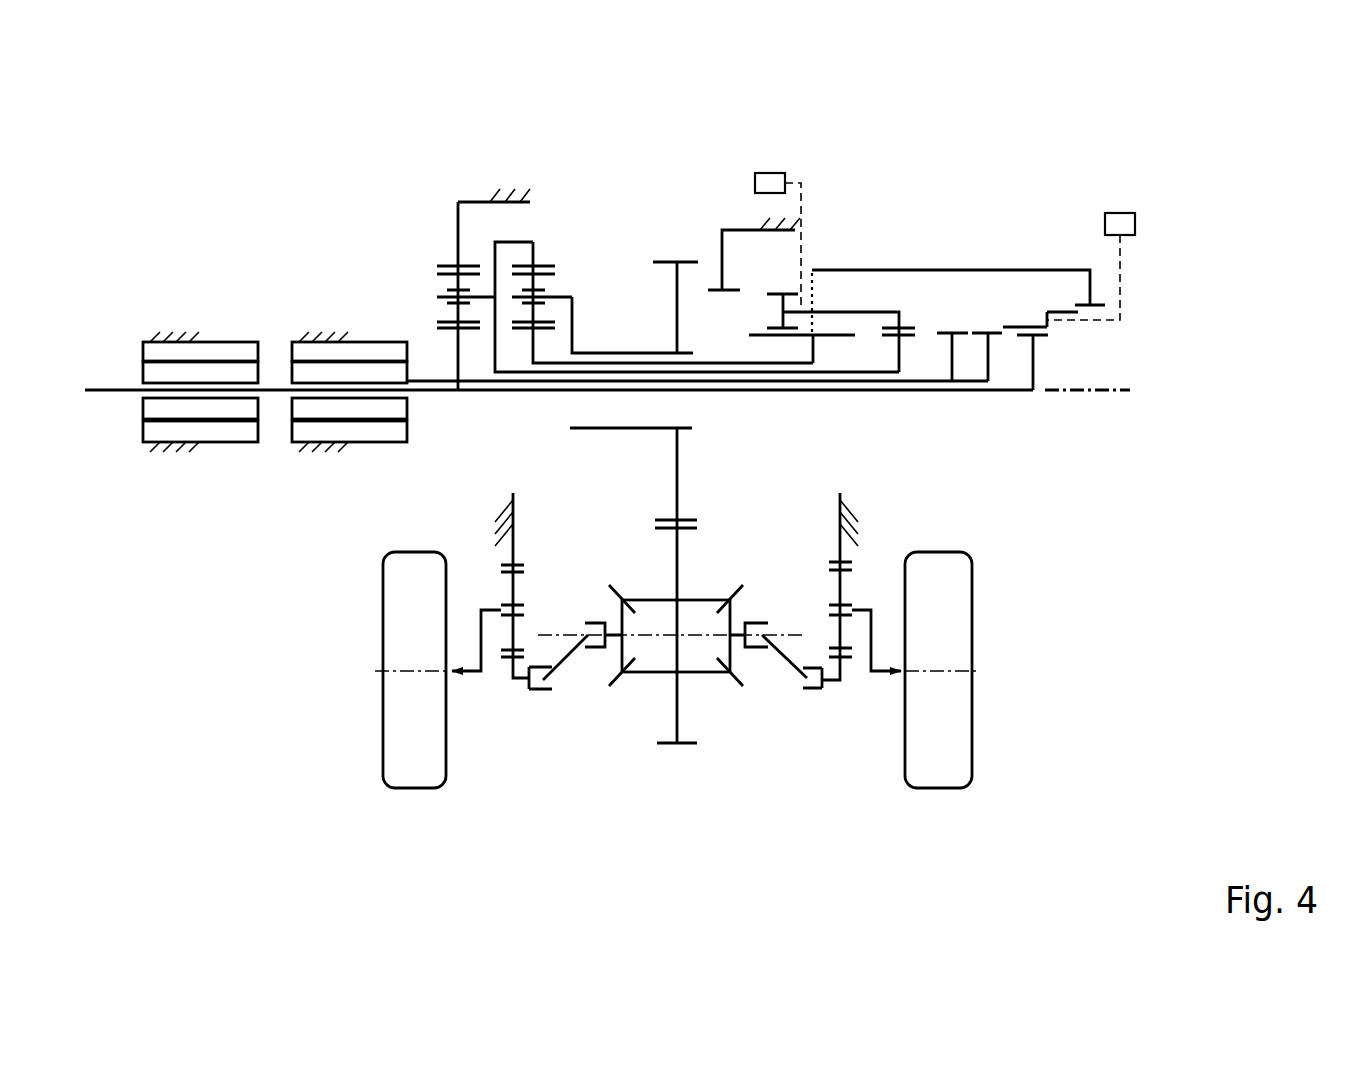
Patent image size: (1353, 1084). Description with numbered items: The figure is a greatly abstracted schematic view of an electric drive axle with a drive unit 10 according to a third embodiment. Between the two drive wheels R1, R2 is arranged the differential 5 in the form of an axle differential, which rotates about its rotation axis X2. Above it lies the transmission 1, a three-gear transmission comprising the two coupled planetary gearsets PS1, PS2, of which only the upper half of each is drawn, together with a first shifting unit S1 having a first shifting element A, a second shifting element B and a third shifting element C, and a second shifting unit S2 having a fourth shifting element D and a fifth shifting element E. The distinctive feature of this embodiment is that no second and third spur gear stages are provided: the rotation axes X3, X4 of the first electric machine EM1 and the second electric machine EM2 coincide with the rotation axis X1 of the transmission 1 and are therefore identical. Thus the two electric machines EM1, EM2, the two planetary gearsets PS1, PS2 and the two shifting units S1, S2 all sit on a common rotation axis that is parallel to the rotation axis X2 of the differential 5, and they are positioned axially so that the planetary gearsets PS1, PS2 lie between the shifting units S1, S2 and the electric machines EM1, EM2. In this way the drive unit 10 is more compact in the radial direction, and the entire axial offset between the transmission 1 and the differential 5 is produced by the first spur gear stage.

The drive unit 10 is at (1173, 203).
The transmission 1 is at (642, 192).
The first electric machine EM1 is at (333, 318).
The second electric machine EM2 is at (218, 318).
The first planetary gearset PS1 is at (458, 401).
The second planetary gearset PS2 is at (533, 401).
The first shifting unit S1 is at (829, 300).
The second shifting unit S2 is at (973, 233).
The first shifting element A is at (754, 254).
The second shifting element B is at (898, 345).
The third shifting element C is at (951, 357).
The fourth shifting element D is at (1080, 291).
The fifth shifting element E is at (986, 357).
The rotation axis of the transmission X1 is at (690, 447).
The rotation axis of the first electric machine X3 is at (690, 447).
The rotation axis of the second electric machine X4 is at (1080, 393).
The rotation axis of the differential X2 is at (803, 638).
The differential 5 is at (635, 703).
The drive wheel R1 is at (418, 762).
The drive wheel R2 is at (948, 767).